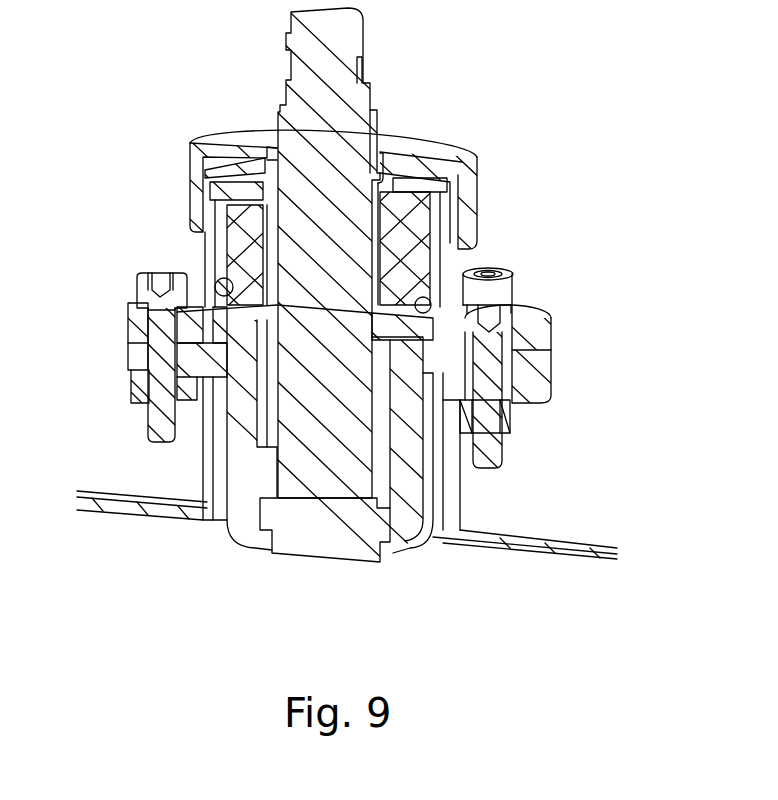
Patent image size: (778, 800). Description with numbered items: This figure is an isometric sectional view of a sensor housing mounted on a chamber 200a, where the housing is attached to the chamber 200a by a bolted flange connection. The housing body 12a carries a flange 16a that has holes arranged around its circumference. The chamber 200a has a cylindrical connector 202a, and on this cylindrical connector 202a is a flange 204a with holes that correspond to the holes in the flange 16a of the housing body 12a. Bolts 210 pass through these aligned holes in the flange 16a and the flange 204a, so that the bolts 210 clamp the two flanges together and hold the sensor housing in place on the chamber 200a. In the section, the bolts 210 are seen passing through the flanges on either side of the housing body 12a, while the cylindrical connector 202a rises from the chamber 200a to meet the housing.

The bolts 210 is at (137, 290).
The flange 16a is at (512, 360).
The flange 204a is at (530, 388).
The housing body 12a is at (240, 427).
The cylindrical connector 202a is at (438, 472).
The chamber 200a is at (535, 548).